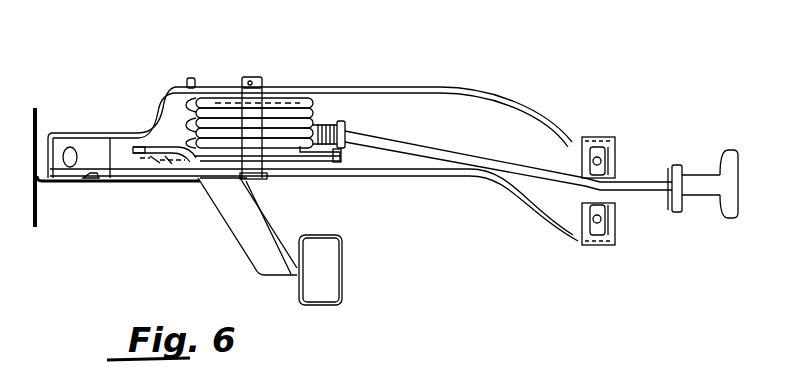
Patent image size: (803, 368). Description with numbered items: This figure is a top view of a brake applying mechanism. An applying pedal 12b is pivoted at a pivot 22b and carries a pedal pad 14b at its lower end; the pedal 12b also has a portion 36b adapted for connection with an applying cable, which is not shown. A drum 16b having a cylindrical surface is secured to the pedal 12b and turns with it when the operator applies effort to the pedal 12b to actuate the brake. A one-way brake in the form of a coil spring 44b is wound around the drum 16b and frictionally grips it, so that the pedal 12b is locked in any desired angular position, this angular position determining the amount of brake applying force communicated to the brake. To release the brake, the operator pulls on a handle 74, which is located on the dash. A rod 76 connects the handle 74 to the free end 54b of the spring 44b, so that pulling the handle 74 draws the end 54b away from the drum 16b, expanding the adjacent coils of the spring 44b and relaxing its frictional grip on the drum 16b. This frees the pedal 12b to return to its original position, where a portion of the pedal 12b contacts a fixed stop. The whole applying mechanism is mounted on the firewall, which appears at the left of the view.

The applying pedal 12b is at (237, 222).
The pedal pad 14b is at (332, 263).
The drum 16b is at (303, 96).
The pivot 22b is at (252, 78).
The portion 36b is at (137, 148).
The coil spring 44b is at (212, 125).
The free end 54b is at (345, 125).
The handle 74 is at (705, 178).
The rod 76 is at (490, 163).